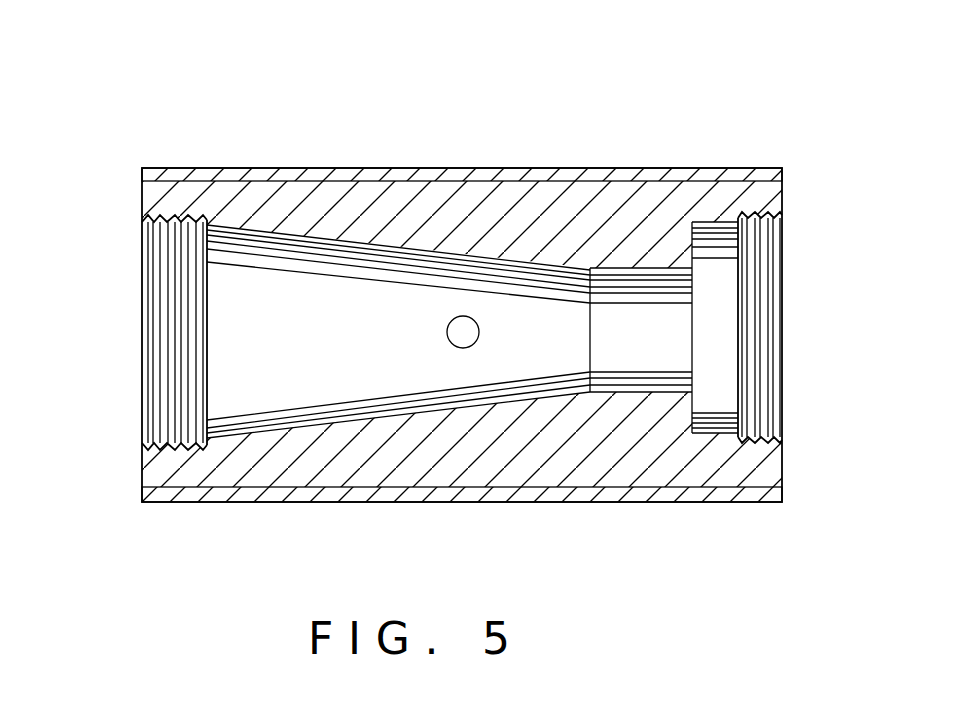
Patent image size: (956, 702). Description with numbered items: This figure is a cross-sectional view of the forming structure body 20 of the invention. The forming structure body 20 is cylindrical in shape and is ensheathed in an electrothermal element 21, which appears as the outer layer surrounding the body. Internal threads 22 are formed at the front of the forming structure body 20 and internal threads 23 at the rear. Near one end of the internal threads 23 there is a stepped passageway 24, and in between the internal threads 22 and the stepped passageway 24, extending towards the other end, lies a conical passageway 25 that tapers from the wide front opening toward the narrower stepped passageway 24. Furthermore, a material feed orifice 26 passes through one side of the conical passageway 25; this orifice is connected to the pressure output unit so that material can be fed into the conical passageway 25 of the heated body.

The forming structure body 20 is at (486, 138).
The electrothermal element 21 is at (360, 176).
The internal threads 22 is at (168, 276).
The internal threads 23 is at (764, 253).
The stepped passageway 24 is at (643, 306).
The conical passageway 25 is at (280, 286).
The material feed orifice 26 is at (462, 342).